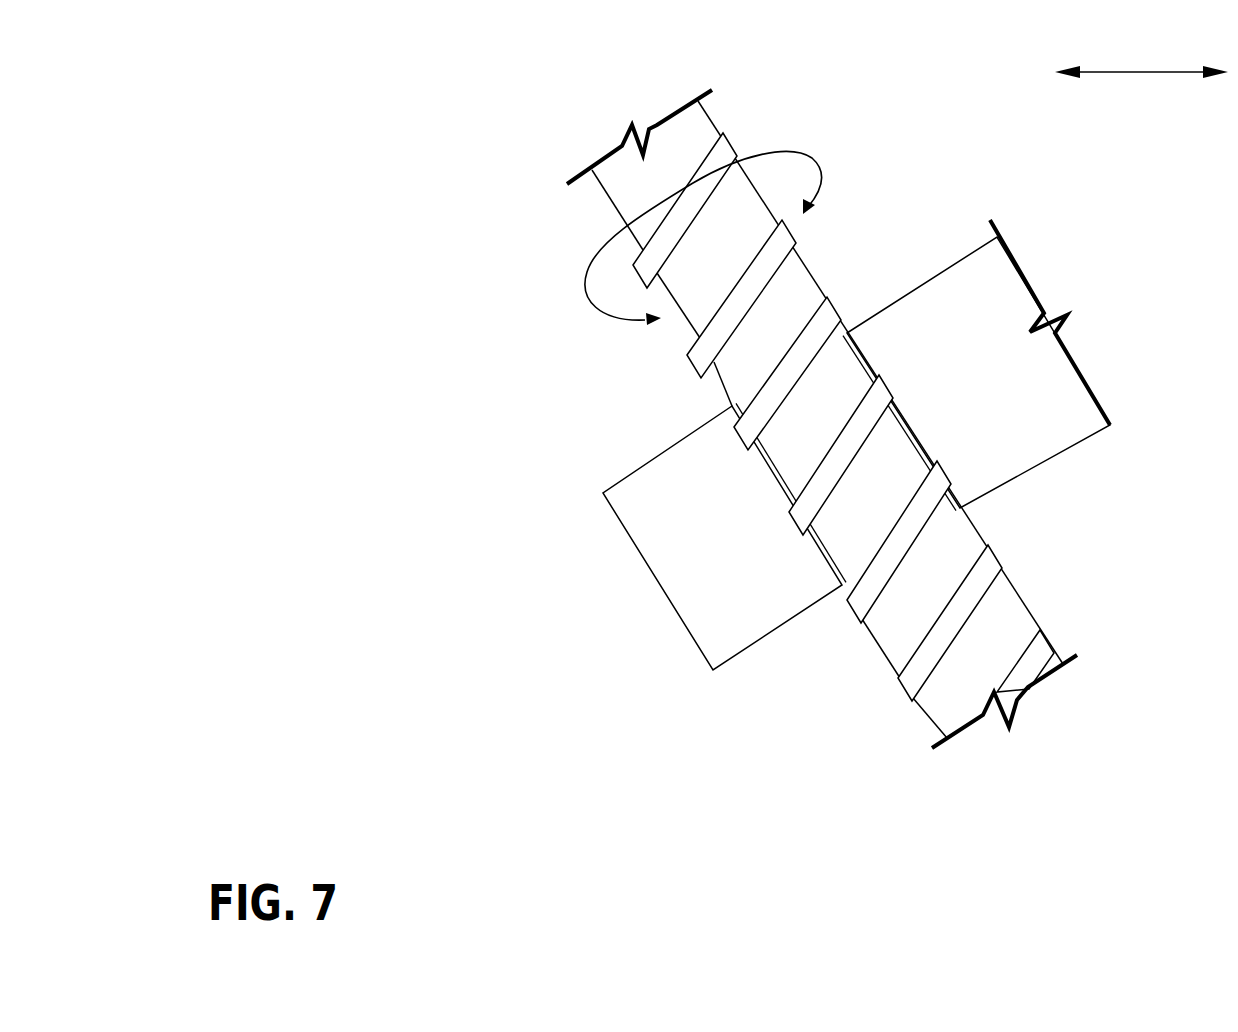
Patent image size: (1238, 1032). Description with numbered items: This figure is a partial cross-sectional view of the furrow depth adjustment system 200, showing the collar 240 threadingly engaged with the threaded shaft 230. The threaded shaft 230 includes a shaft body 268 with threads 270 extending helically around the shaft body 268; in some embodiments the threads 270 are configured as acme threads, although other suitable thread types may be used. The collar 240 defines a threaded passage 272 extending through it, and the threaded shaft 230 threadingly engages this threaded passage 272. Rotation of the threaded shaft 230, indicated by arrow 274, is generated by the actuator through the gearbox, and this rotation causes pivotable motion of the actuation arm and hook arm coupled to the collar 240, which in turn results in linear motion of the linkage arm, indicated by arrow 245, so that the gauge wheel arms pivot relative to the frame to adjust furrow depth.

The furrow depth adjustment system 200 is at (482, 156).
The threaded shaft 230 is at (596, 196).
The collar 240 is at (652, 575).
The arrow 245 is at (1157, 77).
The shaft body 268 is at (875, 617).
The threads 270 is at (733, 147).
The threaded passage 272 is at (722, 403).
The arrow 274 is at (807, 147).